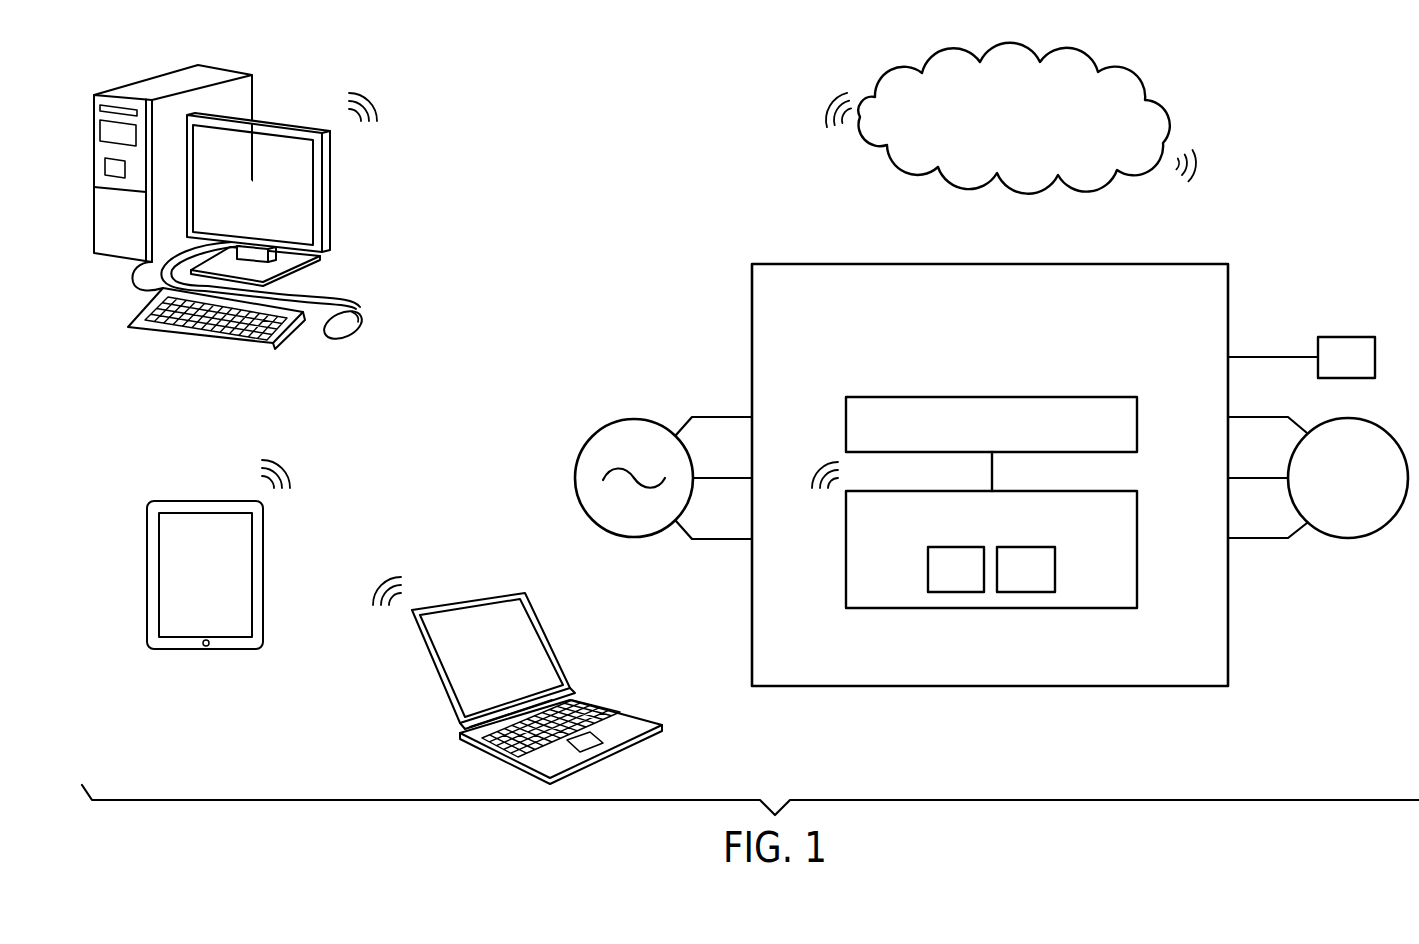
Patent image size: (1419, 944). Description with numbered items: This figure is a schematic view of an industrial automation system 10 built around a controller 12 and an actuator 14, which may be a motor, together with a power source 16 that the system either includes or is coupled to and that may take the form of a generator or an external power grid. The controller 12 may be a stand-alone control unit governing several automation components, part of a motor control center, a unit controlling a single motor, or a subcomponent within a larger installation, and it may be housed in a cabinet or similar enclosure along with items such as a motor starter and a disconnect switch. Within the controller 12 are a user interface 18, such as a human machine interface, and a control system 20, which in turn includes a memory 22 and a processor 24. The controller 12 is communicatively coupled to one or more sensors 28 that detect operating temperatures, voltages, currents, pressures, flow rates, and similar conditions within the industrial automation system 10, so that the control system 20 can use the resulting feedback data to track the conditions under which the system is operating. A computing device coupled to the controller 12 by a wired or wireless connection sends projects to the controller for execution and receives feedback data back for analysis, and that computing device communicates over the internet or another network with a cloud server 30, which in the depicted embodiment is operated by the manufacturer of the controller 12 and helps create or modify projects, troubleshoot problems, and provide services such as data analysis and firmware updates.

The industrial automation system 10 is at (672, 281).
The controller 12 is at (990, 264).
The actuator 14 is at (1348, 418).
The power source 16 is at (633, 418).
The user interface 18 is at (1137, 423).
The control system 20 is at (1137, 550).
The memory 22 is at (928, 563).
The processor 24 is at (1055, 568).
The sensors 28 is at (1348, 337).
The cloud server 30 is at (1132, 72).